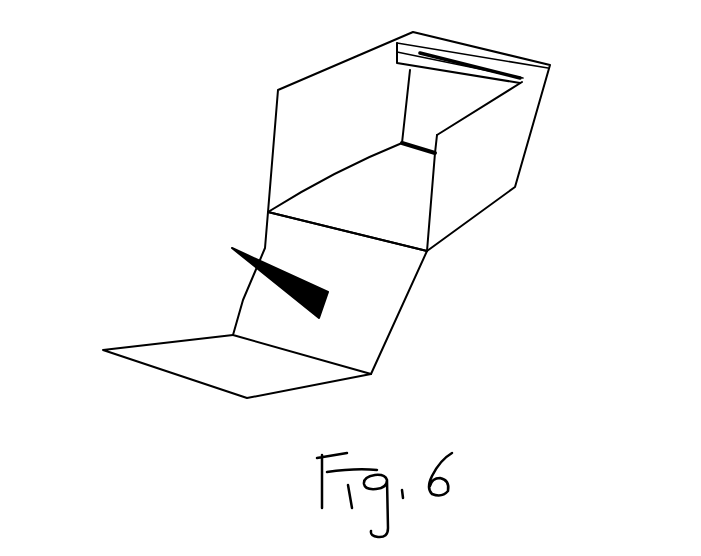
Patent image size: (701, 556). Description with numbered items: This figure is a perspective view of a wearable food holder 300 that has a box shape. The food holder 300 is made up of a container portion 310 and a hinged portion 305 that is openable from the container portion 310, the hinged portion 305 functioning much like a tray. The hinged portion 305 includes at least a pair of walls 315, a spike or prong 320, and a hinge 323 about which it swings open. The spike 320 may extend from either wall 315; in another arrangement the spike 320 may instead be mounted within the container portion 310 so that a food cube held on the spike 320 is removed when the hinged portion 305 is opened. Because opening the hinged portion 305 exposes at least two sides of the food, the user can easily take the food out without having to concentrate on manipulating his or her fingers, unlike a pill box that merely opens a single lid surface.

The food holder 300 is at (160, 115).
The container portion 310 is at (500, 177).
The hinge 323 is at (428, 253).
The walls 315 is at (245, 316).
The hinged portion 305 is at (388, 336).
The spike 320 is at (247, 258).